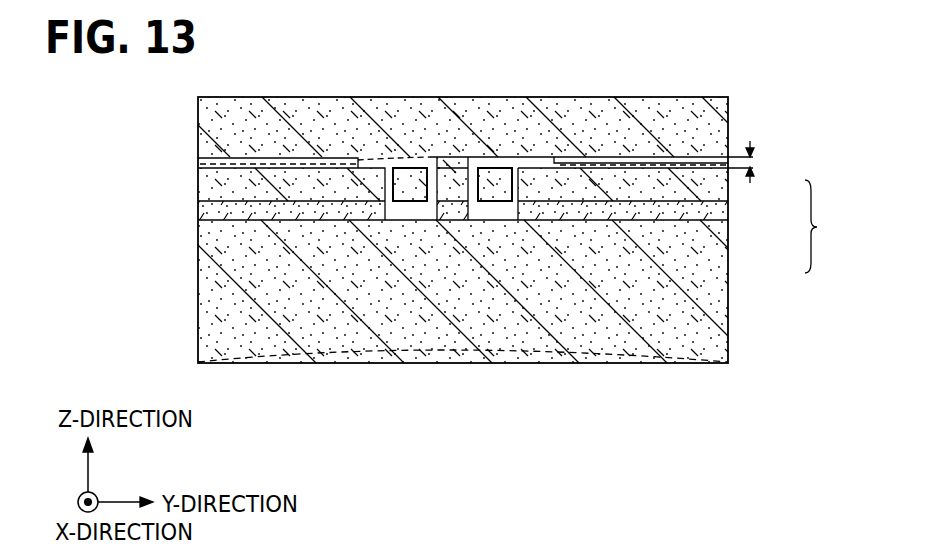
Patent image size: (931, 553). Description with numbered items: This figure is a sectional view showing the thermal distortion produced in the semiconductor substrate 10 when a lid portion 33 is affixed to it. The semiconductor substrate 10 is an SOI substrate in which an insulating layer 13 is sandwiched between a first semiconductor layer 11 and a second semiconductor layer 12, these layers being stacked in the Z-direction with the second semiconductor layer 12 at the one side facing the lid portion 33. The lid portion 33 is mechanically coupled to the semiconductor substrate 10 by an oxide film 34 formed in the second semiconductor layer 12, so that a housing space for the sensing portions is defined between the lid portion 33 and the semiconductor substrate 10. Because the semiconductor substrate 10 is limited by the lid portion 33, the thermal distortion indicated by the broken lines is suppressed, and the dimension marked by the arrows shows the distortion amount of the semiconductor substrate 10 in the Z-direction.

The semiconductor substrate 10 is at (824, 226).
The first semiconductor layer 11 is at (717, 246).
The second semiconductor layer 12 is at (717, 190).
The insulating layer 13 is at (717, 212).
The lid portion 33 is at (717, 128).
The oxide film 34 is at (198, 159).